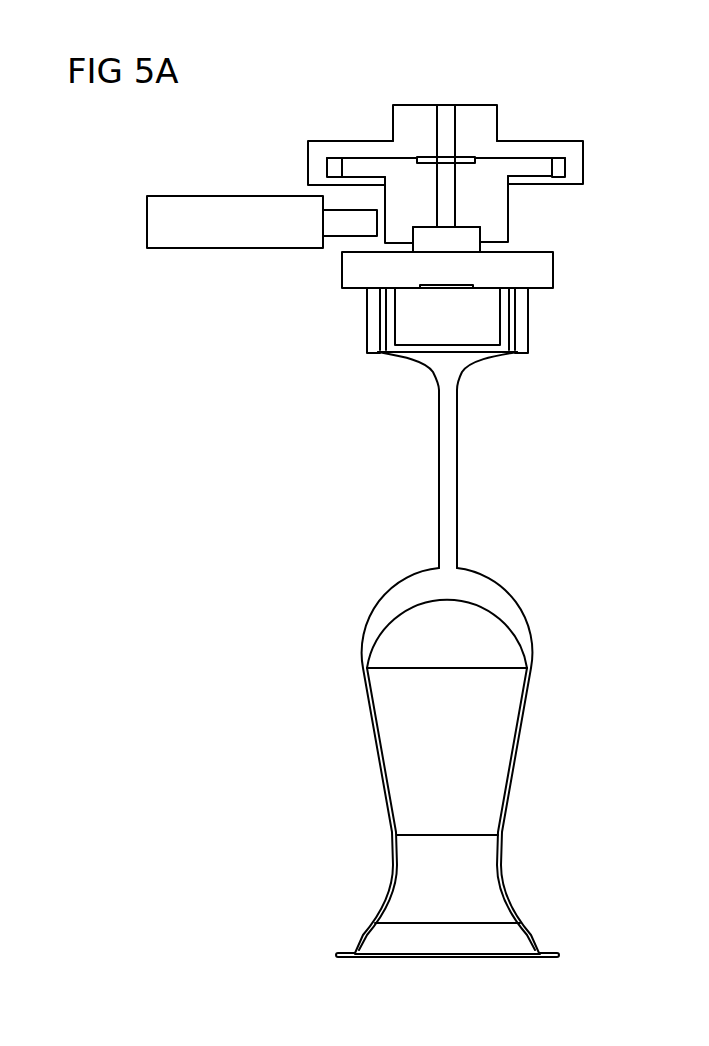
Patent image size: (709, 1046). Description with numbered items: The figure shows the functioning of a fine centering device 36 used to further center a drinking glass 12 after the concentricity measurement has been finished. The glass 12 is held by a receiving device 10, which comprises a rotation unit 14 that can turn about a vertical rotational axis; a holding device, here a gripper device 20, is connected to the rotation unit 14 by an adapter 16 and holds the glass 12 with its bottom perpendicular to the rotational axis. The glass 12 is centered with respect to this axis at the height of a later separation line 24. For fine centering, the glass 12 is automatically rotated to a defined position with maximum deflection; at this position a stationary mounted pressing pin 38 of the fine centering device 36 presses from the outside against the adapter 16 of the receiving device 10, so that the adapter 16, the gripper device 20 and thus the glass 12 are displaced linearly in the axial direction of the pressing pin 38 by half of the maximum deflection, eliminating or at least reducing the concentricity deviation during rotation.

The receiving device 10 is at (573, 130).
The drinking glass 12 is at (521, 628).
The rotation unit 14 is at (493, 124).
The adapter 16 is at (500, 228).
The gripper device 20 is at (545, 273).
The separation line 24 is at (503, 832).
The fine centering device 36 is at (210, 242).
The pressing pin 38 is at (335, 247).